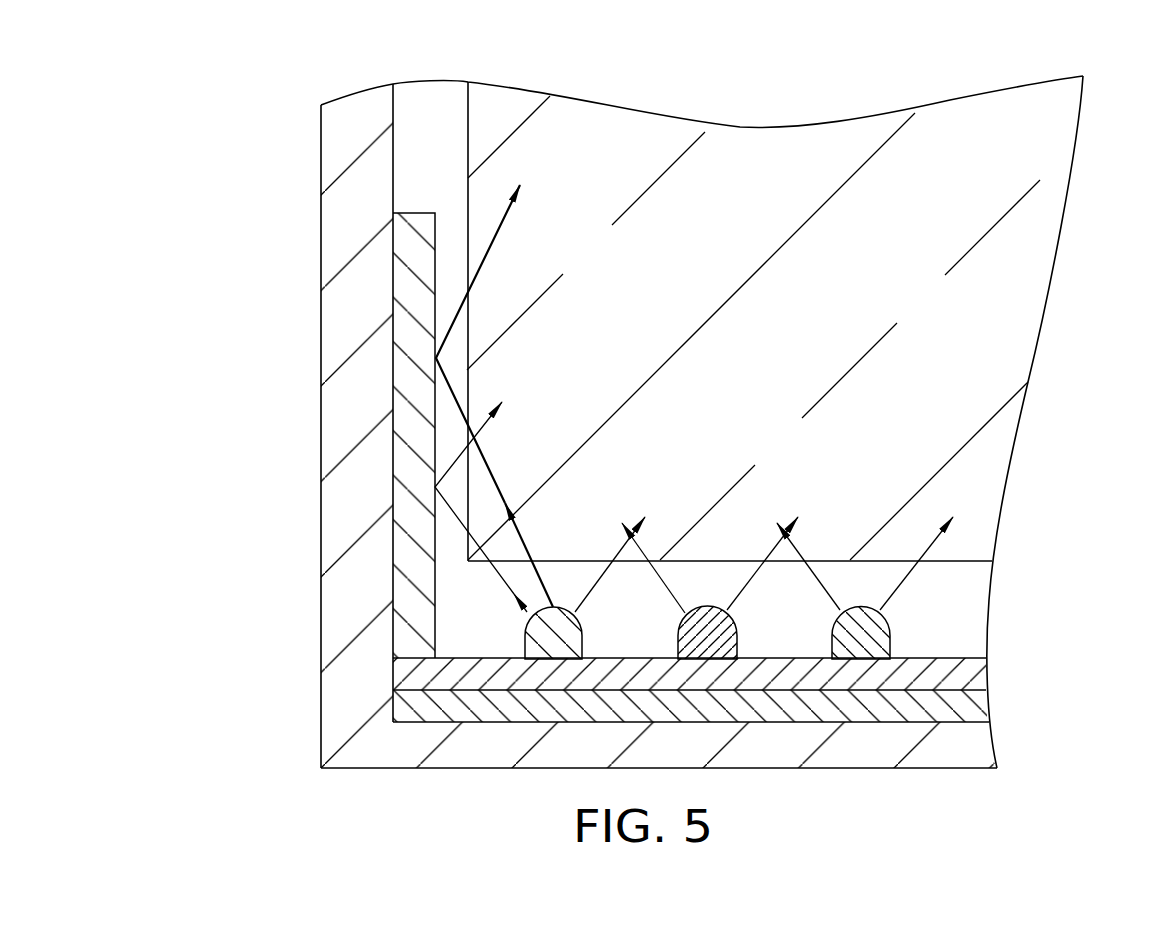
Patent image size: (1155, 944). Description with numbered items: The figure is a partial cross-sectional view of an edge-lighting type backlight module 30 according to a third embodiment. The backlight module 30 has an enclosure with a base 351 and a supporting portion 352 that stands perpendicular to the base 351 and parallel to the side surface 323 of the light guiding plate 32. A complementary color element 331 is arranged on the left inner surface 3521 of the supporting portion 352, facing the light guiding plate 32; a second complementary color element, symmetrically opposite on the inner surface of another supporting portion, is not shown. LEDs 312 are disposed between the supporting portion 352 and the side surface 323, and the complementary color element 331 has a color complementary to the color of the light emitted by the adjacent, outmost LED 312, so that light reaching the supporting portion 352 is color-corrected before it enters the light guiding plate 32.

The edge-lighting type backlight module 30 is at (704, 84).
The light guiding plate 32 is at (990, 164).
The side surface of light guiding plate 323 is at (466, 153).
The complementary color element 331 is at (415, 297).
The LED 312 is at (553, 634).
The base 351 is at (975, 751).
The supporting portion 352 is at (358, 428).
The left inner surface of supporting portion 3521 is at (396, 110).